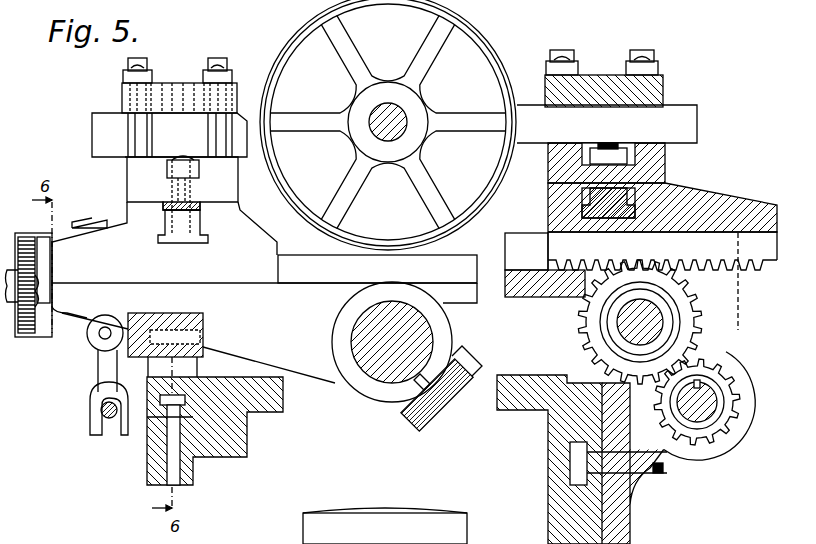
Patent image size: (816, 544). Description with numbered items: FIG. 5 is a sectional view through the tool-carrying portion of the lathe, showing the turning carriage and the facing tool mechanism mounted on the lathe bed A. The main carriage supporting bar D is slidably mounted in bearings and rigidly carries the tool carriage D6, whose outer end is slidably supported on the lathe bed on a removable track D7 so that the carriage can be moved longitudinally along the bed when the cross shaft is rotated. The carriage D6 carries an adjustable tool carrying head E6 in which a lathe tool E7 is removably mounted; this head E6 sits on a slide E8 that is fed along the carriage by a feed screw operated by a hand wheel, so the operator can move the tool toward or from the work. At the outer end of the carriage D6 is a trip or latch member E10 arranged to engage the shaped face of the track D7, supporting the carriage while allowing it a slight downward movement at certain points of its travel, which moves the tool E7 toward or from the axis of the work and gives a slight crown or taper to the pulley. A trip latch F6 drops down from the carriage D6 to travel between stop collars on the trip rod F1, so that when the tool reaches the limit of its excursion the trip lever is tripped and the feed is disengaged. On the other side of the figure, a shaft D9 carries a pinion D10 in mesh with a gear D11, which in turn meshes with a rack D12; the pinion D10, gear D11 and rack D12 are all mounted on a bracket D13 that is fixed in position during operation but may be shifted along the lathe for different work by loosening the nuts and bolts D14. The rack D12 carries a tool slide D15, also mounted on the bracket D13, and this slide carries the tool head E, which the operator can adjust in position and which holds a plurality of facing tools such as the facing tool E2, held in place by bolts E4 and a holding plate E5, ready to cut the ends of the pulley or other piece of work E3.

The lathe tool E7 is at (247, 125).
The adjustable tool carrying head E6 is at (205, 205).
The slide E8 is at (132, 230).
The piece of work E3 is at (483, 55).
The bolts E4 is at (560, 52).
The holding plate E5 is at (605, 80).
The facing tool E2 is at (685, 125).
The tool head E is at (660, 158).
The tool slide D15 is at (740, 205).
The rack D12 is at (758, 266).
The gear D11 is at (700, 318).
The pinion D10 is at (725, 380).
The shaft D9 is at (702, 410).
The tool carriage D6 is at (312, 337).
The main carriage supporting bar D is at (420, 337).
The trip or latch member E10 is at (187, 368).
The trip rod F1 is at (100, 420).
The trip latch F6 is at (100, 410).
The removable track D7 is at (150, 420).
The lathe bed A is at (247, 437).
The bracket D13 is at (623, 532).
The nuts and bolts D14 is at (668, 472).